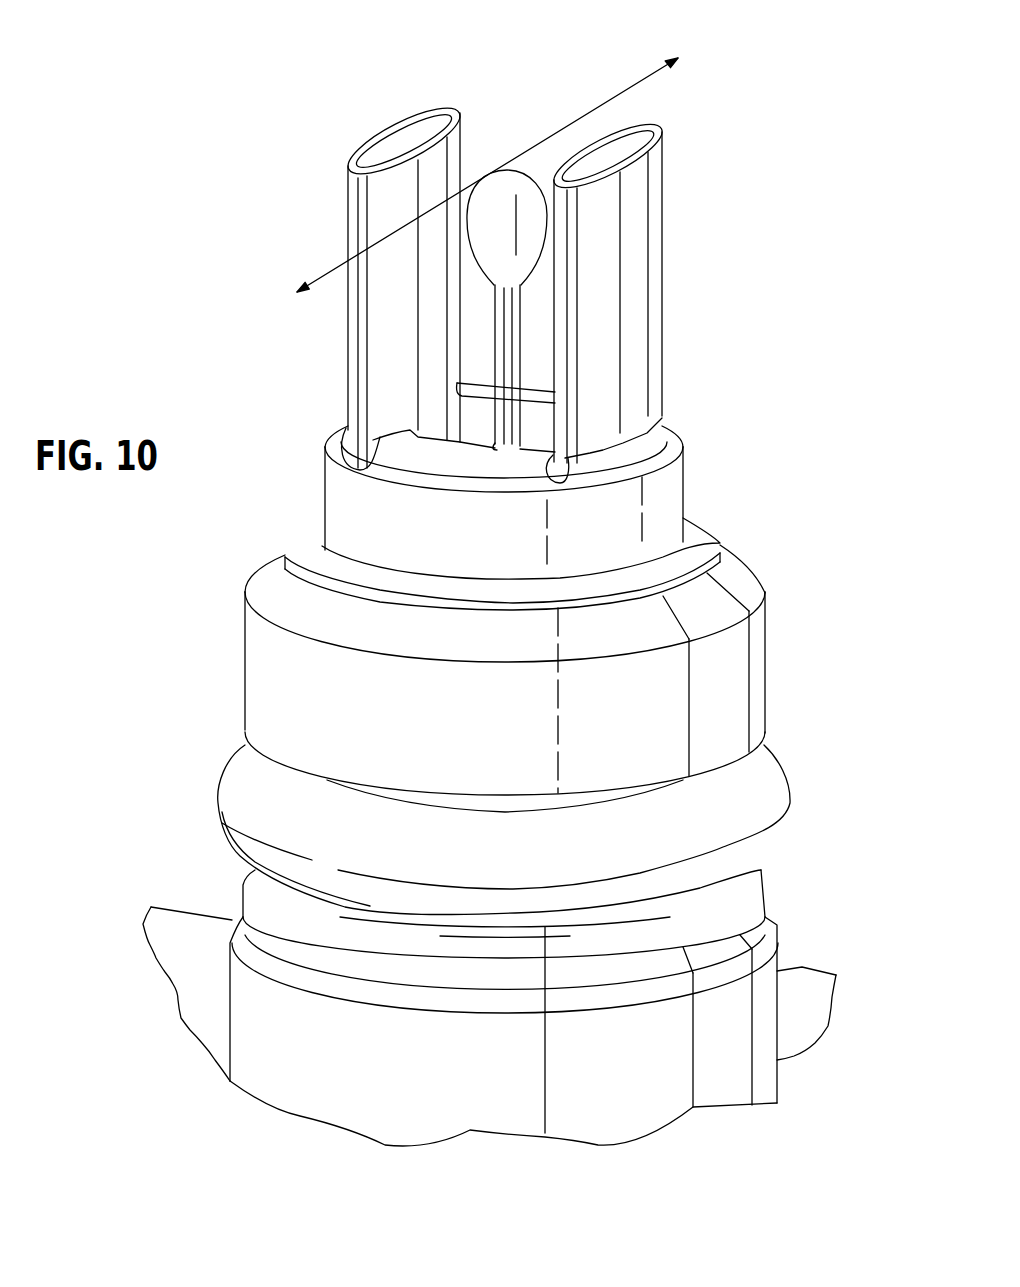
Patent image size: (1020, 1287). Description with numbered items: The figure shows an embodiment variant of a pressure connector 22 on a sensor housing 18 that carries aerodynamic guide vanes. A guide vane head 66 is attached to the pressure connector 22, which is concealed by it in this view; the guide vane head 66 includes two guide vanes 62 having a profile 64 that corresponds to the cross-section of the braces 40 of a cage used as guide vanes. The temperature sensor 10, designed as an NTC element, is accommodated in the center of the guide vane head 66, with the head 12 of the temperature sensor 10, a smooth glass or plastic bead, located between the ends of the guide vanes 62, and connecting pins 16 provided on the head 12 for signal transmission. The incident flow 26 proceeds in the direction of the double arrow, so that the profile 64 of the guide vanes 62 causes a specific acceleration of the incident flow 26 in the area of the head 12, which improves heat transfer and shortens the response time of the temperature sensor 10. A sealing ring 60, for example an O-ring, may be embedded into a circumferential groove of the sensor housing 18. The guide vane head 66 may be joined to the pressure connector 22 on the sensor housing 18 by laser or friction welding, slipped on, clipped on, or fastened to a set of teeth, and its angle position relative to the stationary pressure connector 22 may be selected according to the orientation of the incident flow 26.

The temperature sensor 10 is at (504, 107).
The head 12 is at (528, 233).
The connecting pins 16 is at (497, 422).
The sensor housing 18 is at (807, 992).
The pressure connector 22 is at (303, 685).
The incident flow 26 is at (587, 112).
The braces 40 is at (387, 325).
The sealing ring 60 is at (281, 801).
The guide vanes 62 is at (387, 372).
The profile 64 is at (403, 130).
The guide vane head 66 is at (303, 183).